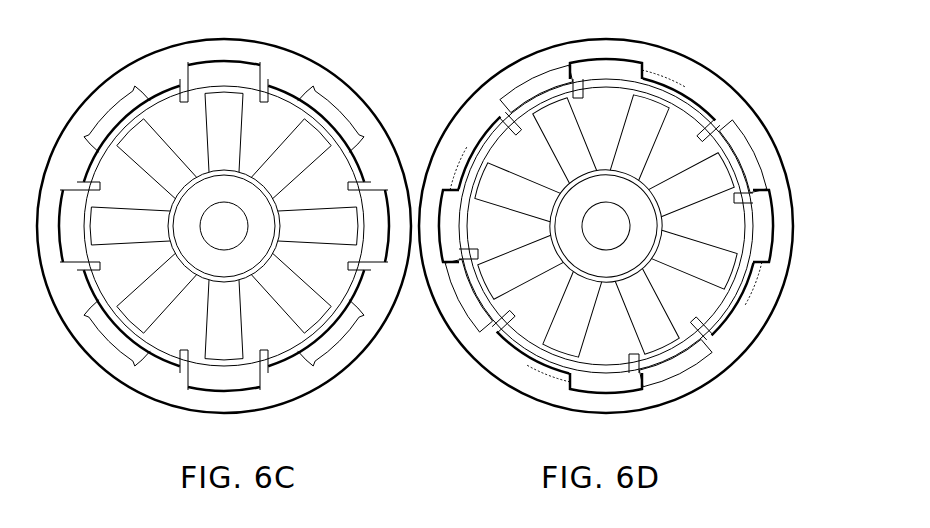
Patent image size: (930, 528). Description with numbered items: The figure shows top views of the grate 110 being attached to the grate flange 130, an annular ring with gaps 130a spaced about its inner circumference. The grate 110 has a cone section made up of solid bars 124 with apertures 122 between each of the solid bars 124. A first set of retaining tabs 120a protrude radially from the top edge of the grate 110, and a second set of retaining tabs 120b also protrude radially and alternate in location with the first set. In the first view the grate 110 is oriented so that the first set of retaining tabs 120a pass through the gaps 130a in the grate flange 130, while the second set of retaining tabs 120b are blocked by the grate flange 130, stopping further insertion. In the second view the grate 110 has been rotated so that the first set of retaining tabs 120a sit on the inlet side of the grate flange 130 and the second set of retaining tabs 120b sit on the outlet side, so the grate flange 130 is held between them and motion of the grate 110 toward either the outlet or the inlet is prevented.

In FIG. 6C, the grate 110 is at (248, 188).
In FIG. 6D, the grate 110 is at (720, 208).
In FIG. 6C, the first set of retaining tabs 120a is at (112, 113).
In FIG. 6D, the first set of retaining tabs 120a is at (690, 83).
In FIG. 6C, the second set of retaining tabs 120b is at (193, 75).
In FIG. 6D, the second set of retaining tabs 120b is at (556, 80).
In FIG. 6C, the apertures 122 is at (245, 94).
In FIG. 6C, the solid bars 124 is at (318, 131).
In FIG. 6C, the grate flange 130 is at (152, 68).
In FIG. 6D, the grate flange 130 is at (533, 70).
In FIG. 6C, the gaps 130a is at (211, 60).
In FIG. 6D, the gaps 130a is at (592, 58).